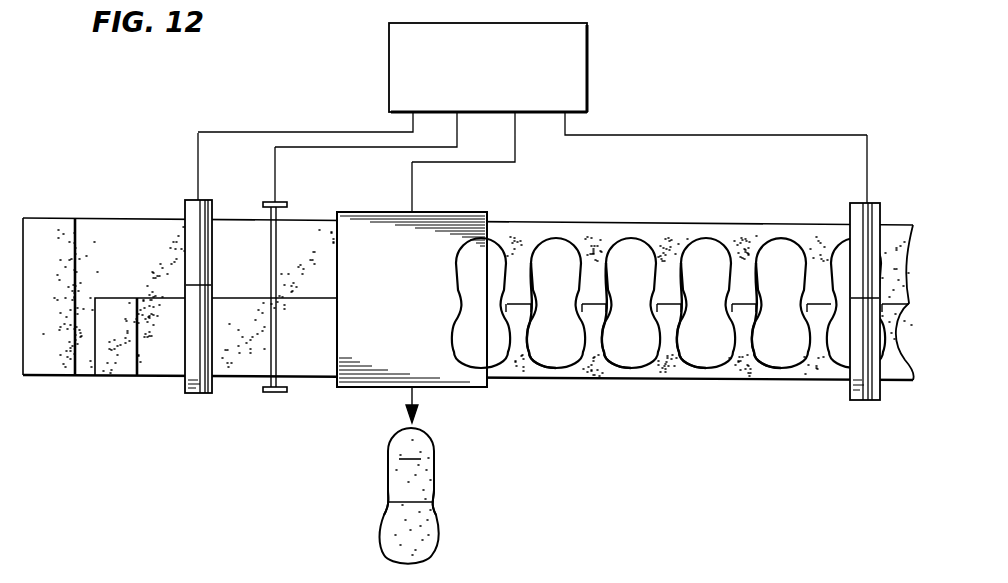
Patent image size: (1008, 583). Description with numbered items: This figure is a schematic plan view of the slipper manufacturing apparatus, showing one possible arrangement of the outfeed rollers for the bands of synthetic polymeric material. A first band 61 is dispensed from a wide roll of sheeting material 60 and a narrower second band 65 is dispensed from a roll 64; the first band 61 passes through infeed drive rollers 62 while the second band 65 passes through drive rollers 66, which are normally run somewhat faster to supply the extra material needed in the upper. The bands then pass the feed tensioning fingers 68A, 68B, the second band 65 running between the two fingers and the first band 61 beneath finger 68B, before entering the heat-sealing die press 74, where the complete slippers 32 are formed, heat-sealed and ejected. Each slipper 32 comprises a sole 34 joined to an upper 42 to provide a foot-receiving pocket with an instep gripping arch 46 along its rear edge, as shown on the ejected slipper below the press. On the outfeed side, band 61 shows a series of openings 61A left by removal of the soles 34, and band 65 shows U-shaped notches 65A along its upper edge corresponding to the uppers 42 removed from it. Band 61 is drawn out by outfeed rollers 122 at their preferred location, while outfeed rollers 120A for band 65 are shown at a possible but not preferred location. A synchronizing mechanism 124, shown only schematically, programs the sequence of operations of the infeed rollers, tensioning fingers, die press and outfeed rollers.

The roll of synthetic polymeric sheeting material 60 is at (62, 233).
The first band 61 is at (137, 235).
The openings 61A is at (560, 253).
The drive rollers 62 is at (186, 200).
The roll of synthetic polymeric sheeting material 64 is at (110, 355).
The second band 65 is at (155, 357).
The U-shaped notches 65A is at (578, 358).
The drive rollers 66 is at (207, 393).
The feed tensioning finger 68A is at (287, 211).
The feed tensioning finger 68B is at (287, 210).
The heat-sealing die press 74 is at (455, 235).
The outfeed rollers 122 is at (880, 220).
The outfeed rollers 120A is at (875, 395).
The synchronizing mechanism 124 is at (589, 50).
The slipper 32 is at (417, 478).
The sole 34 is at (421, 459).
The instep gripping arch 46 is at (400, 500).
The upper 42 is at (403, 532).